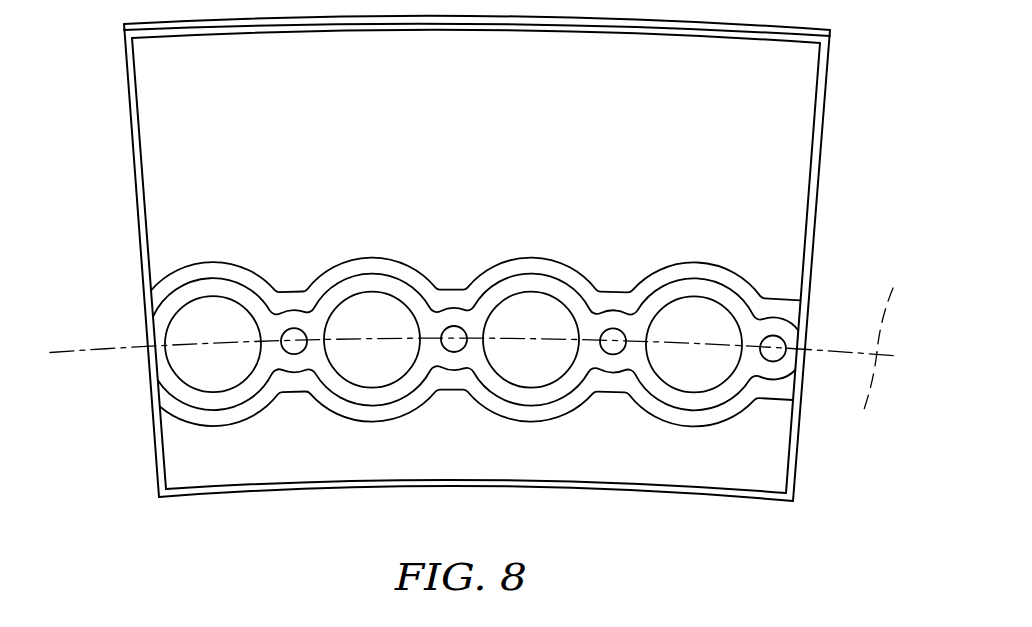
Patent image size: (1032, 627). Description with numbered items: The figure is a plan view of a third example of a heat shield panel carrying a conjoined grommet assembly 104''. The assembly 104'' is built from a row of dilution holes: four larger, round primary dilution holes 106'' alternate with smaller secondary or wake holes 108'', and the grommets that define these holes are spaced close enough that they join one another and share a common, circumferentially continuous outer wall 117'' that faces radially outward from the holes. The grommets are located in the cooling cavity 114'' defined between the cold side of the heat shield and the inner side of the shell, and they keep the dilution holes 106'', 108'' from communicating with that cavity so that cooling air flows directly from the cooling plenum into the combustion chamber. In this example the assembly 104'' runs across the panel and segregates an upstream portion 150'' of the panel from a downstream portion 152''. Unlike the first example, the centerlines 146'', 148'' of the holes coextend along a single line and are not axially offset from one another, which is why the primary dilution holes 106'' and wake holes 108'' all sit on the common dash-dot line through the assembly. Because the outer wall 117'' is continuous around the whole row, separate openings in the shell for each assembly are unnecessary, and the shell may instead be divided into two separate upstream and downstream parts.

The conjoined grommet assembly 104'' is at (460, 258).
The upstream portion 150'' is at (298, 128).
The cooling cavity 114'' is at (643, 137).
The downstream portion 152'' is at (233, 448).
The outer wall 117'' is at (475, 328).
The primary dilution hole 106'' is at (453, 381).
The wake hole 108'' is at (533, 292).
The centerline 146'' is at (893, 303).
The centerline 148'' is at (861, 403).